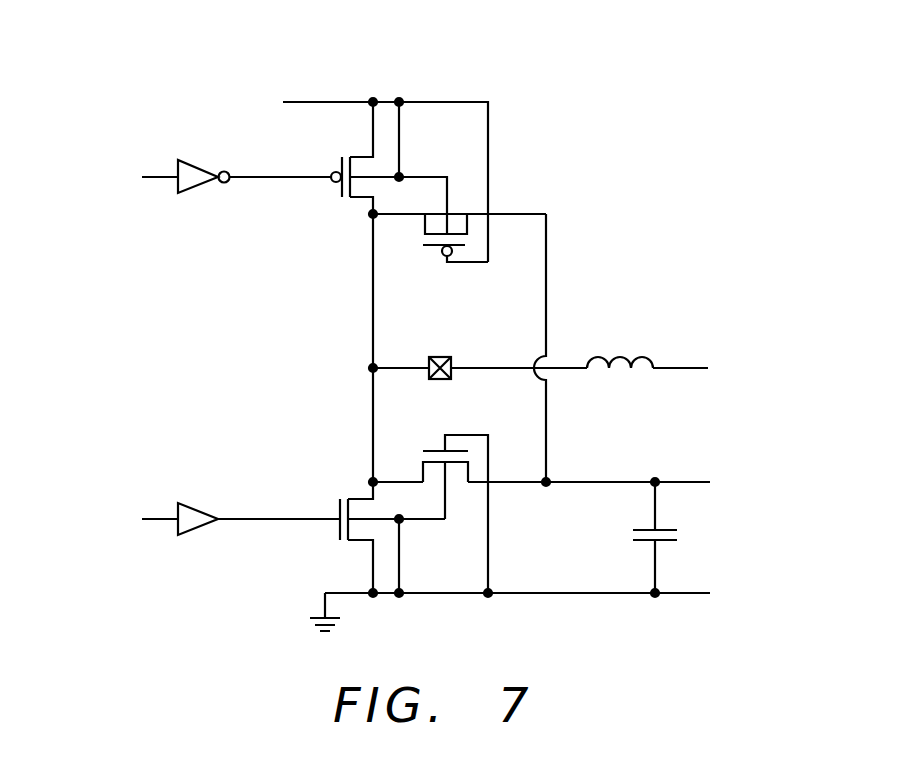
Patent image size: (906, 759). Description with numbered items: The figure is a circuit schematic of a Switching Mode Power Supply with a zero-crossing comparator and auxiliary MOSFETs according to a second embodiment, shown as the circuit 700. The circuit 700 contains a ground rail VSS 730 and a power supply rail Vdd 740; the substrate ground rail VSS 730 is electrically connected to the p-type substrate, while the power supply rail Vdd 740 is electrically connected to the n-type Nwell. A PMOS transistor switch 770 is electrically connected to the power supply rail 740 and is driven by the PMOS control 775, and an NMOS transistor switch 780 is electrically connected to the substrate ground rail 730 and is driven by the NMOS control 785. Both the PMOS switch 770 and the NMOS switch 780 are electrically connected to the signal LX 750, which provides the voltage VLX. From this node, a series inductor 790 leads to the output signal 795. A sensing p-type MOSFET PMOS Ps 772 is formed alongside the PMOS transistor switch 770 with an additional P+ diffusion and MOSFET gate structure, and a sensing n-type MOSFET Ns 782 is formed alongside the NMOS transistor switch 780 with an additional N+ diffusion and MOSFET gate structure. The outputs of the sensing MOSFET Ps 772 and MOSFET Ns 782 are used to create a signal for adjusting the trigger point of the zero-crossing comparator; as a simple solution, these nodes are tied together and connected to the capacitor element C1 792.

The circuit 700 is at (140, 352).
The ground rail VSS 730 is at (298, 618).
The power supply rail Vdd 740 is at (325, 76).
The signal LX 750 is at (470, 337).
The PMOS transistor switch 770 is at (330, 141).
The sensing p-type MOSFET PMOS Ps 772 is at (430, 277).
The PMOS control 775 is at (113, 160).
The NMOS transistor switch 780 is at (330, 483).
The sensing n-type MOSFET Ns 782 is at (445, 427).
The NMOS control 785 is at (113, 503).
The series inductor 790 is at (618, 377).
The capacitor element C1 792 is at (702, 528).
The output signal 795 is at (735, 352).